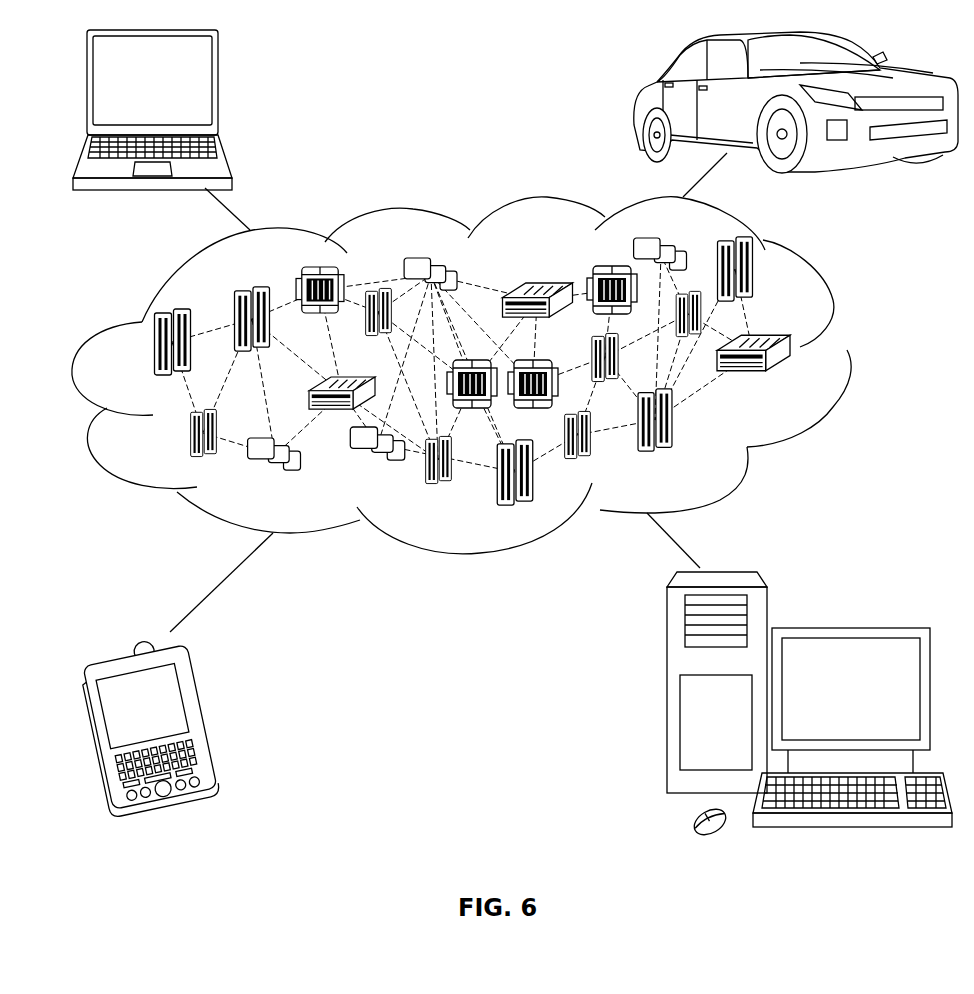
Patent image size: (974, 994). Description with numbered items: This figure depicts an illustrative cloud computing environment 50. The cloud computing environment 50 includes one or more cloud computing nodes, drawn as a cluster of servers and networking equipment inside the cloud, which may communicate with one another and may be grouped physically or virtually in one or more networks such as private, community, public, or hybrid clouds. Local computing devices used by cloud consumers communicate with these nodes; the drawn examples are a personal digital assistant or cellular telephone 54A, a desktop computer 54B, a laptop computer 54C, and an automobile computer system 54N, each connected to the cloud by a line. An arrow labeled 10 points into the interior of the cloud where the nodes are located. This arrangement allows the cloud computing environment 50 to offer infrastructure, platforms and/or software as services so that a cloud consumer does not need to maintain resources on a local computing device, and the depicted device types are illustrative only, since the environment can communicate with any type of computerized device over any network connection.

The cloud computing environment 50 is at (848, 350).
The cloud computing node 10 is at (800, 383).
The personal digital assistant or cellular telephone 54A is at (208, 718).
The desktop computer 54B is at (848, 625).
The laptop computer 54C is at (218, 88).
The automobile computer system 54N is at (637, 102).